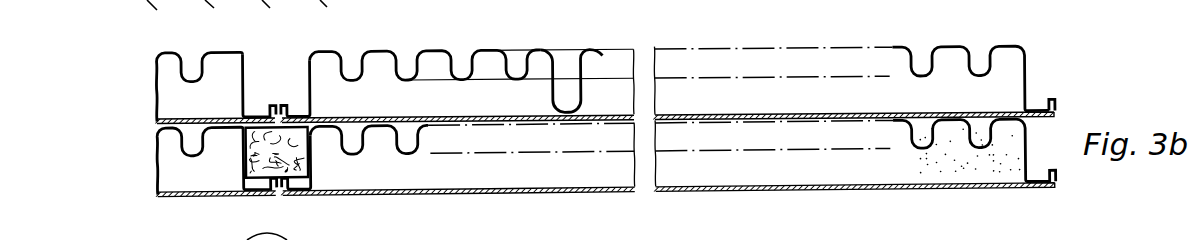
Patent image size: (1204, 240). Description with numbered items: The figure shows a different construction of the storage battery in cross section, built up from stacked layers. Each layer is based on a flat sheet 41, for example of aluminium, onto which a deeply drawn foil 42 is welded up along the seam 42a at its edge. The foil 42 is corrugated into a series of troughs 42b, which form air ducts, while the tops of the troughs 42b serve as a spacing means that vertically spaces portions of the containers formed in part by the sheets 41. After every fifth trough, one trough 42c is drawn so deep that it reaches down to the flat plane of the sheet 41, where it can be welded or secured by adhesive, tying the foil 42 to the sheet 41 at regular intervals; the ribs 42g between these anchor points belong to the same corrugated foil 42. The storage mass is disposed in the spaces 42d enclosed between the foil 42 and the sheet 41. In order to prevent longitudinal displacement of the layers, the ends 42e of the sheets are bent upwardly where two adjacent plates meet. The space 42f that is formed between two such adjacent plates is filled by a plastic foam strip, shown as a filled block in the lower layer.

The flat sheet 41 is at (737, 118).
The deeply drawn foil 42 is at (906, 48).
The seam 42a is at (1034, 100).
The trough 42b is at (347, 138).
The deep trough 42c is at (582, 96).
The space 42d is at (952, 163).
The end 42e is at (280, 103).
The space 42f is at (253, 135).
The corrugation ribs 42g is at (399, 62).